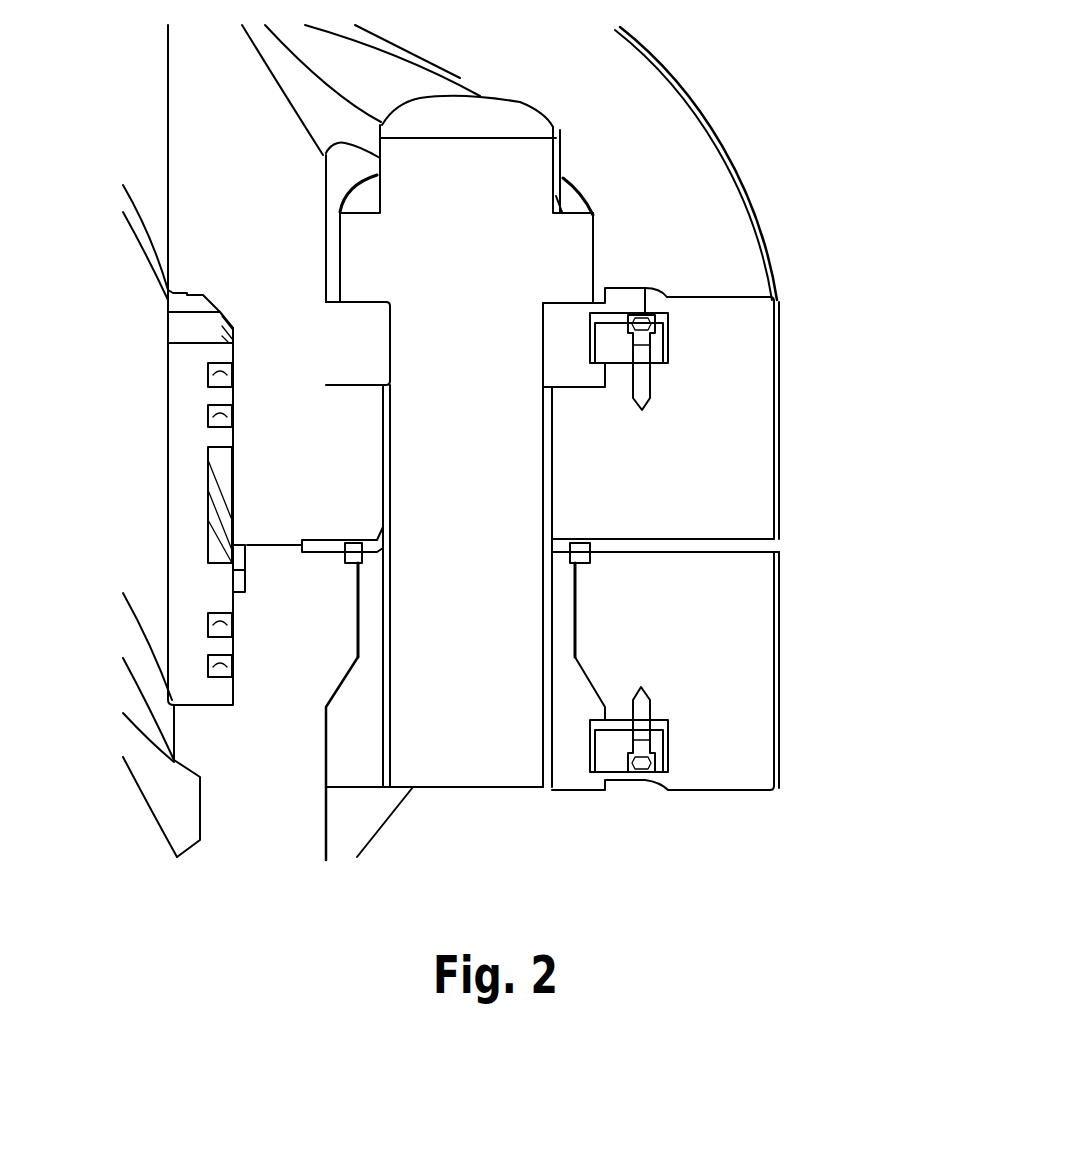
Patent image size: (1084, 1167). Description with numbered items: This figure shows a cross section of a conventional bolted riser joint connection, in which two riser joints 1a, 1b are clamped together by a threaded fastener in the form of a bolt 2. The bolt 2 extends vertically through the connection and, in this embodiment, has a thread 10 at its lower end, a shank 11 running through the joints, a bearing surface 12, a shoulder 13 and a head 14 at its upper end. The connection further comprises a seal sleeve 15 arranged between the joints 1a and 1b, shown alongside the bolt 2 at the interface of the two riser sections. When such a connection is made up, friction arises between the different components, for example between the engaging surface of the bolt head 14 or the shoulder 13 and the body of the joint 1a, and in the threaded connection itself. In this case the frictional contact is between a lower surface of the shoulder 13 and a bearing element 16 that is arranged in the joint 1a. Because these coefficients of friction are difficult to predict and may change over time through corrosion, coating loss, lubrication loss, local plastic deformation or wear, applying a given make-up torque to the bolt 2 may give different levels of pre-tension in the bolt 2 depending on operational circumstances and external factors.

The bolt 2 is at (480, 302).
The thread 10 is at (390, 733).
The shank 11 is at (497, 443).
The bearing surface 12 is at (560, 297).
The shoulder 13 is at (573, 238).
The head 14 is at (512, 173).
The seal sleeve 15 is at (177, 443).
The bearing element 16 is at (347, 330).
The riser joint 1a is at (747, 417).
The riser joint 1b is at (747, 617).